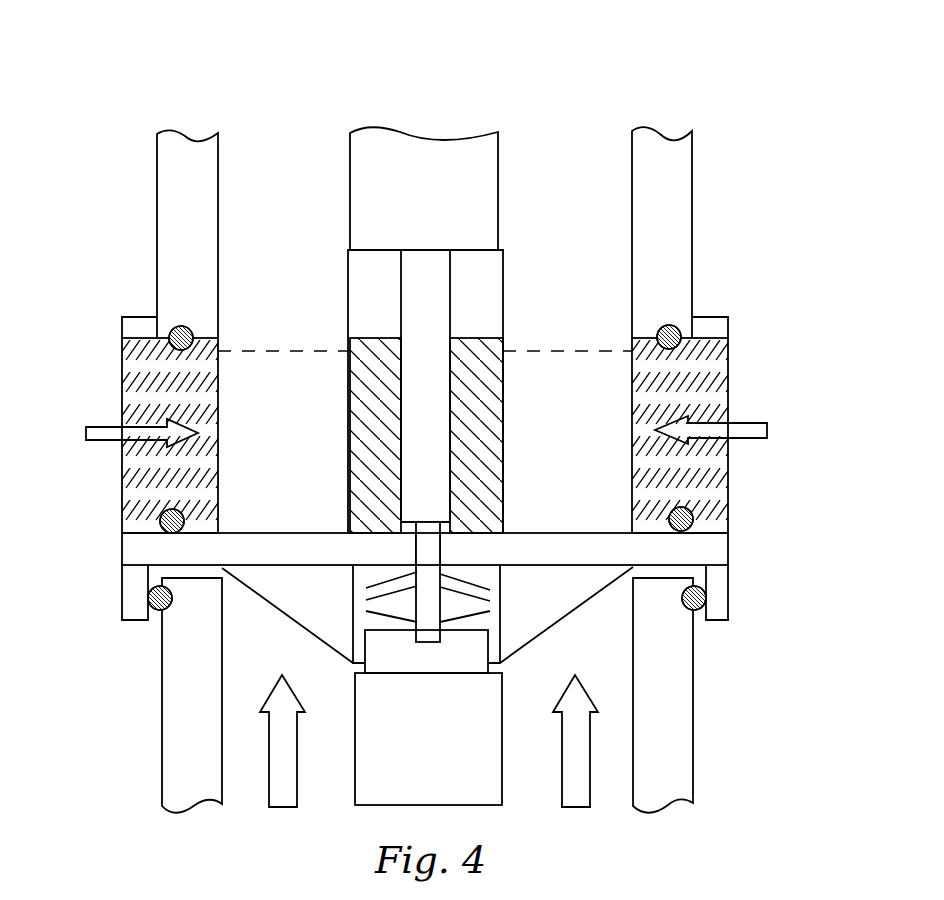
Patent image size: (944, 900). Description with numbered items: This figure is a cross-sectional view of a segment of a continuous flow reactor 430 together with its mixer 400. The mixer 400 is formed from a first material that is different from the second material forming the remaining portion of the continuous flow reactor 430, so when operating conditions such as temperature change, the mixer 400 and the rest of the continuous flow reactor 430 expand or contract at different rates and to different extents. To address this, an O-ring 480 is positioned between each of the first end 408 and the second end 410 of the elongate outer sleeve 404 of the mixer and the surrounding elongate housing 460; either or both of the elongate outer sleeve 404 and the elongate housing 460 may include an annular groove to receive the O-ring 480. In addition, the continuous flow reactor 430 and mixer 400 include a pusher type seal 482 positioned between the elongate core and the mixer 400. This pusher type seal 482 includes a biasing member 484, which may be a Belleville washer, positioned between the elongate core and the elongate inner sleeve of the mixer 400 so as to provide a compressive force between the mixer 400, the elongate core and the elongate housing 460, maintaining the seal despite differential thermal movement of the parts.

The continuous flow reactor 430 is at (206, 72).
The elongate housing 460 is at (157, 203).
The mixer 400 is at (107, 382).
The elongate outer sleeve 404 is at (125, 479).
The first end 408 is at (132, 338).
The second end 410 is at (122, 541).
The pusher type seal 482 is at (122, 566).
The biasing member 484 is at (382, 613).
The O-ring 480 is at (175, 328).